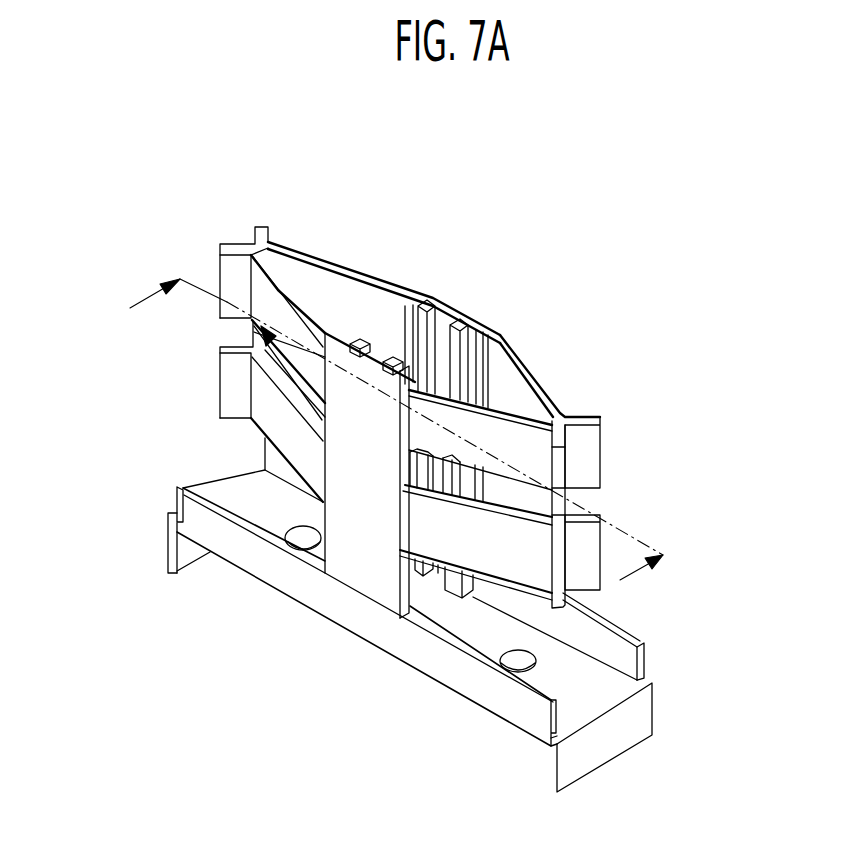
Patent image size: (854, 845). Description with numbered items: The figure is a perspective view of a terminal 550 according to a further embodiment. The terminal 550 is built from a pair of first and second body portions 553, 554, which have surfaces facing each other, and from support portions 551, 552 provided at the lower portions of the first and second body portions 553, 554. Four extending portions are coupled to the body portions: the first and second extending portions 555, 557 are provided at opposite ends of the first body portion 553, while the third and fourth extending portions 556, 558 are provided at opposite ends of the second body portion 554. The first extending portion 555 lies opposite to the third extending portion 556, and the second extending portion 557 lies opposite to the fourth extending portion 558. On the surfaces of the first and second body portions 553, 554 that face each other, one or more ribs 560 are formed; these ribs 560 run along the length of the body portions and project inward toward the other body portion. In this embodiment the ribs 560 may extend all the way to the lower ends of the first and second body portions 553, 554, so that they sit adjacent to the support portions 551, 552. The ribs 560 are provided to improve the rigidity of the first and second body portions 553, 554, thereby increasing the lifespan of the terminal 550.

The terminal 550 is at (648, 294).
The support portion 551 is at (488, 623).
The support portion 552 is at (607, 743).
The first body portion 553 is at (366, 562).
The second body portion 554 is at (472, 315).
The first extending portion 555 is at (504, 430).
The third extending portion 556 is at (533, 371).
The second extending portion 557 is at (277, 308).
The fourth extending portion 558 is at (332, 265).
The ribs 560 is at (392, 360).